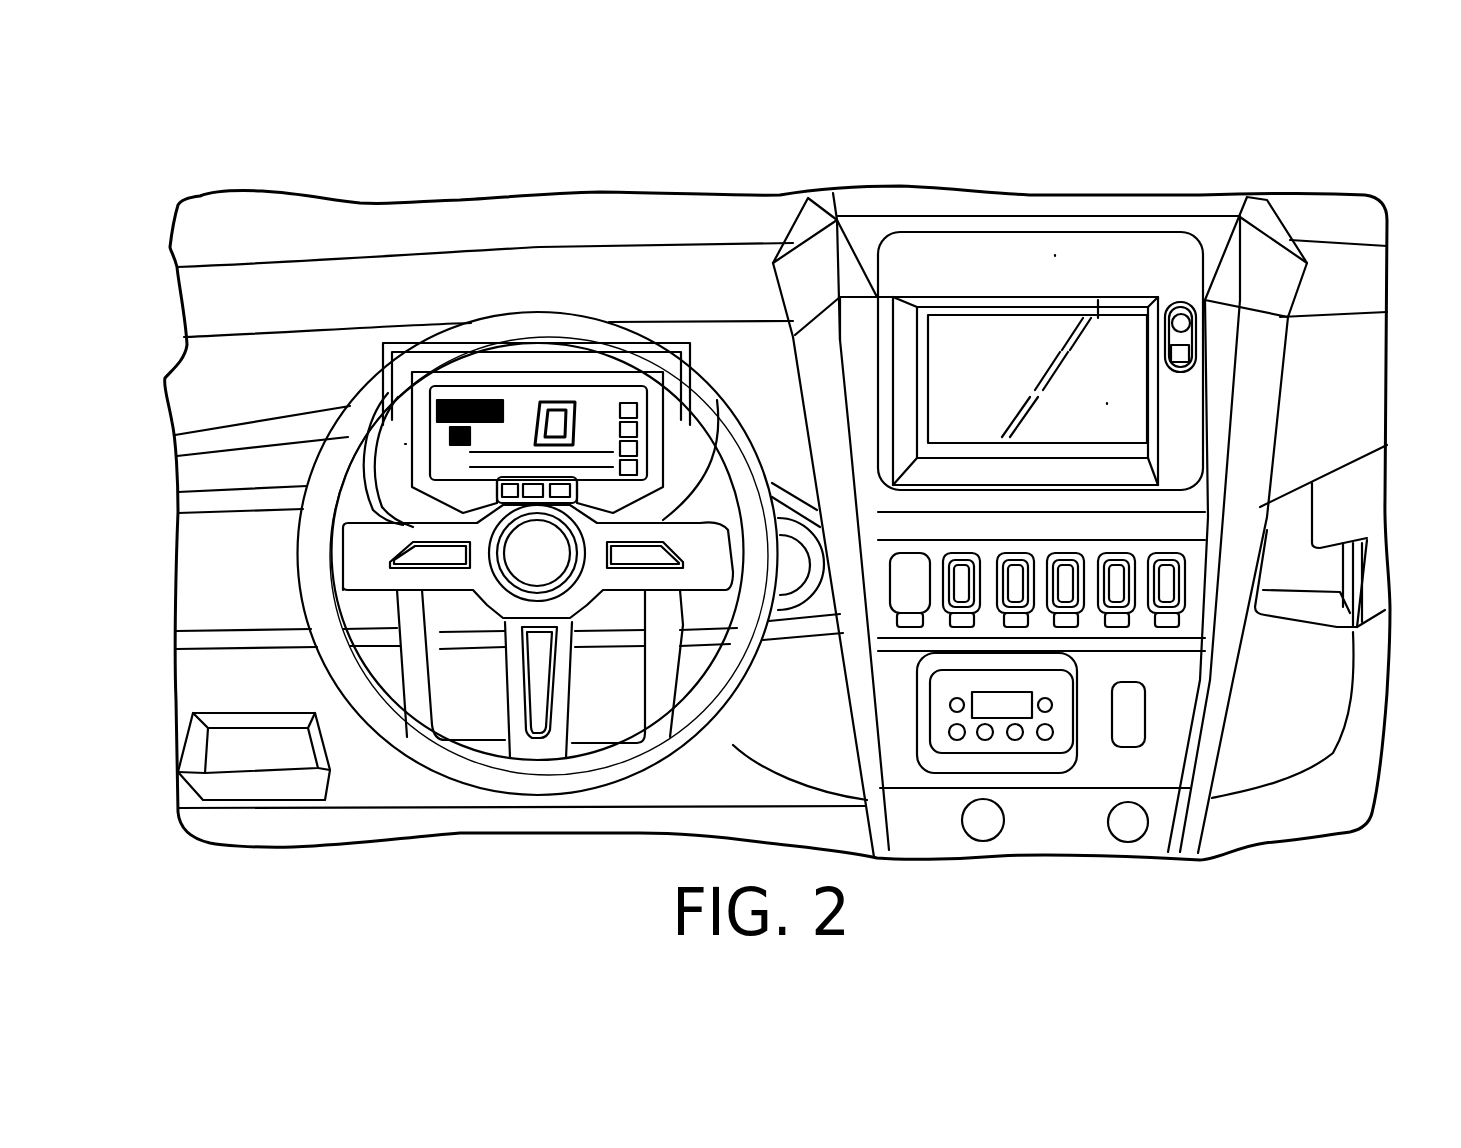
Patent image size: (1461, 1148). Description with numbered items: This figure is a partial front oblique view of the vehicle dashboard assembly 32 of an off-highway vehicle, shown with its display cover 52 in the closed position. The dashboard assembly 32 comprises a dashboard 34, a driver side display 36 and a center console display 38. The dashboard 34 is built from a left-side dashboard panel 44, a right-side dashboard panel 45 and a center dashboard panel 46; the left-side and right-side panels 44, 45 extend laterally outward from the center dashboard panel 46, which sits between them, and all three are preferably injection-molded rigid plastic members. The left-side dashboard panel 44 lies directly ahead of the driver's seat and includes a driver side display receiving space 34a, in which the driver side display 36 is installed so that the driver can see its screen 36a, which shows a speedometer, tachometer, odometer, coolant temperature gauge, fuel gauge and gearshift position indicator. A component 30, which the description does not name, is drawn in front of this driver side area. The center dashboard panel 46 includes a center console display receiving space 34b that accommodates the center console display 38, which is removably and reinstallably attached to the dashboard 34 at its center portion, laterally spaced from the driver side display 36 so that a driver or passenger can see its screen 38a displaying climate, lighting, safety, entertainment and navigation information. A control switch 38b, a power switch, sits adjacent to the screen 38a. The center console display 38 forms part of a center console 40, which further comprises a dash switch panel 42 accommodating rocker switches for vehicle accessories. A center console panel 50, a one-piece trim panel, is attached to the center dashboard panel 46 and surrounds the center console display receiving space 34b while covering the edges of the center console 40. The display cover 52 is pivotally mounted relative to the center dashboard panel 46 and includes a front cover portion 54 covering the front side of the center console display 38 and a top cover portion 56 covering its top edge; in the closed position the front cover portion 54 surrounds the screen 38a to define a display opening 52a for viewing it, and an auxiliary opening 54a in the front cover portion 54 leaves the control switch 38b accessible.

The steering wheel 30 is at (510, 777).
The dashboard assembly 32 is at (470, 190).
The dashboard 34 is at (622, 190).
The driver side display receiving space 34a is at (407, 444).
The center console display receiving space 34b is at (1010, 218).
The driver side display 36 is at (528, 367).
The screen 36a is at (607, 420).
The center console display 38 is at (1098, 315).
The screen 38a is at (1107, 404).
The control switch 38b is at (1192, 356).
The center console 40 is at (970, 162).
The dash switch panel 42 is at (1095, 778).
The left-side dashboard panel 44 is at (384, 234).
The right-side dashboard panel 45 is at (1341, 232).
The center dashboard panel 46 is at (1225, 186).
The center console panel 50 is at (813, 272).
The display cover 52 is at (923, 266).
The display opening 52a is at (922, 372).
The front cover portion 54 is at (1193, 468).
The auxiliary opening 54a is at (1190, 325).
The top cover portion 56 is at (1055, 256).